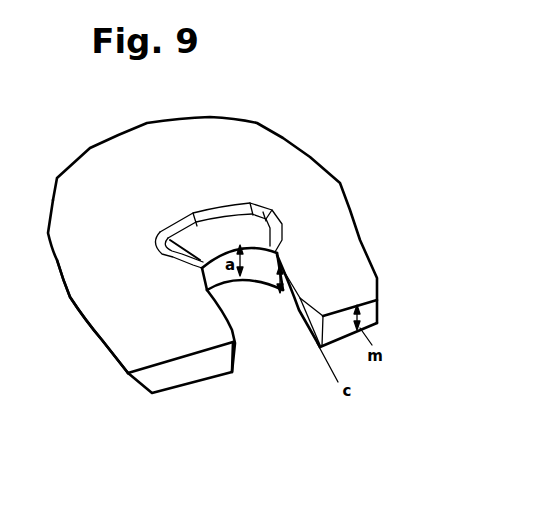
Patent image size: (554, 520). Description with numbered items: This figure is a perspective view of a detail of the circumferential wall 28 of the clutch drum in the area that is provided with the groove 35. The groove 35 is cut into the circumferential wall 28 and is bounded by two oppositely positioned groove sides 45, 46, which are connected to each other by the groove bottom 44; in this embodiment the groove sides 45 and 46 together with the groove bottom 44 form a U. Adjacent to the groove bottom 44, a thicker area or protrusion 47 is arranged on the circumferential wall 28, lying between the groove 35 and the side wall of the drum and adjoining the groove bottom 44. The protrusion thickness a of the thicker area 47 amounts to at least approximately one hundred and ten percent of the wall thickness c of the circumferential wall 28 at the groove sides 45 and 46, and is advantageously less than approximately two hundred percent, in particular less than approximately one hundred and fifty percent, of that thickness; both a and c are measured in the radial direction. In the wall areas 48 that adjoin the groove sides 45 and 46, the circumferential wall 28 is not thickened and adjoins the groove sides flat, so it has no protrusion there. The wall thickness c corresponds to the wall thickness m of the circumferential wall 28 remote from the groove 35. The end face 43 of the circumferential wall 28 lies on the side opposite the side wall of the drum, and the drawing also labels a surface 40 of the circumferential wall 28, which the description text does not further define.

The circumferential wall 28 is at (238, 115).
The top surface 40 is at (272, 148).
The groove bottom 44 is at (255, 258).
The wall areas 48 is at (295, 267).
The groove side 45 is at (295, 291).
The thicker area (protrusion) 47 is at (210, 232).
The groove side 46 is at (217, 308).
The end face 43 is at (180, 378).
The groove 35 is at (272, 352).